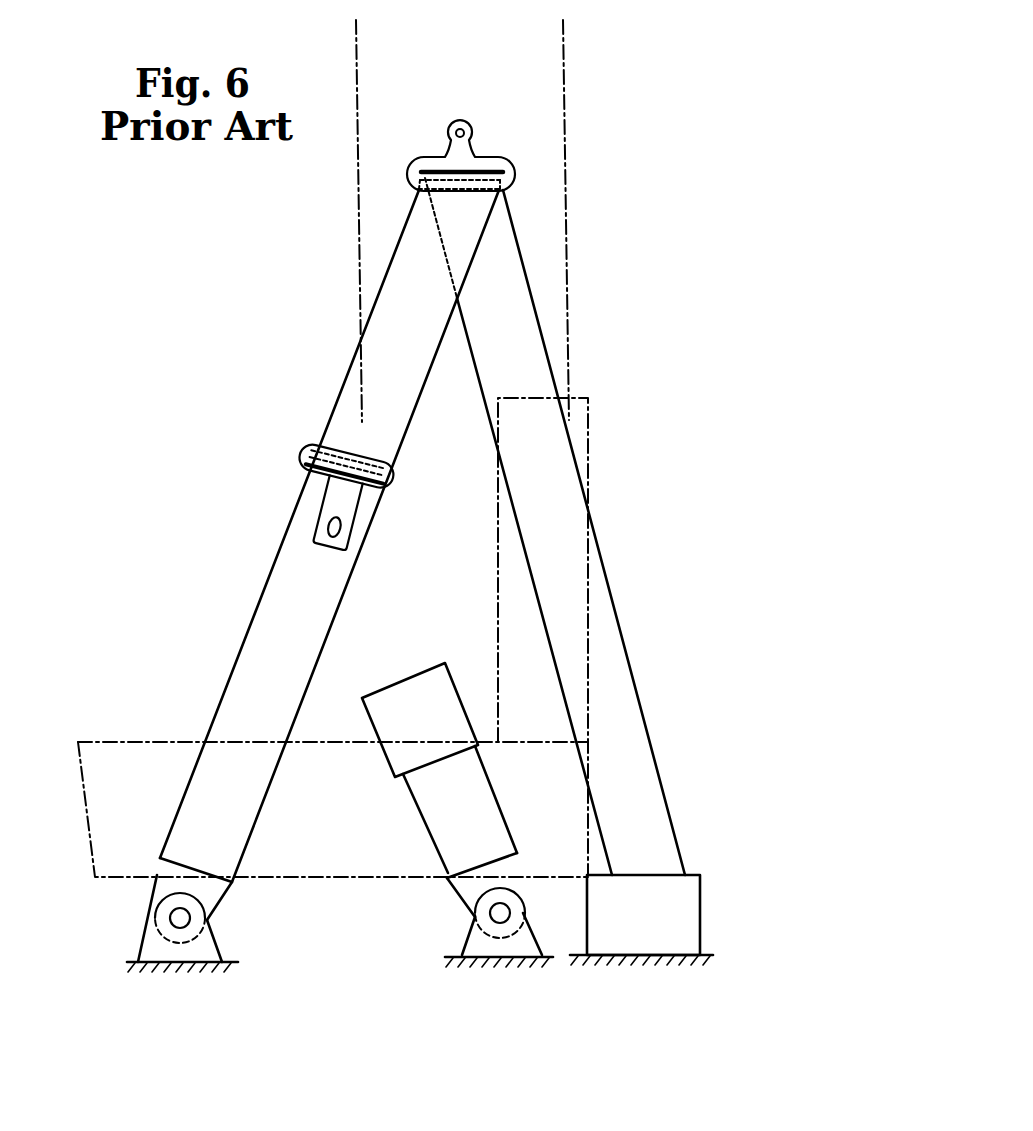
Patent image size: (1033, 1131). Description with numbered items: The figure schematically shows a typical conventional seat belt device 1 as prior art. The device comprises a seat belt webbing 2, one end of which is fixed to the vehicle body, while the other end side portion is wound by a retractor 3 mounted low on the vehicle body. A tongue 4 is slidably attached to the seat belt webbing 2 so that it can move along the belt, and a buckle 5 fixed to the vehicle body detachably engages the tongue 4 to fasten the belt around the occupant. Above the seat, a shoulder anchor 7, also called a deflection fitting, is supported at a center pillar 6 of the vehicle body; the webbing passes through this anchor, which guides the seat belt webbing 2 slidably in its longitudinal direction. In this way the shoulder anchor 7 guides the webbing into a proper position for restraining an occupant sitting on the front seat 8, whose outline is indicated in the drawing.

The seat belt device 1 is at (652, 492).
The seat belt webbing 2 is at (392, 268).
The retractor 3 is at (697, 913).
The tongue 4 is at (305, 468).
The buckle 5 is at (414, 678).
The center pillar 6 is at (553, 42).
The shoulder anchor 7 is at (500, 157).
The front seat 8 is at (143, 755).